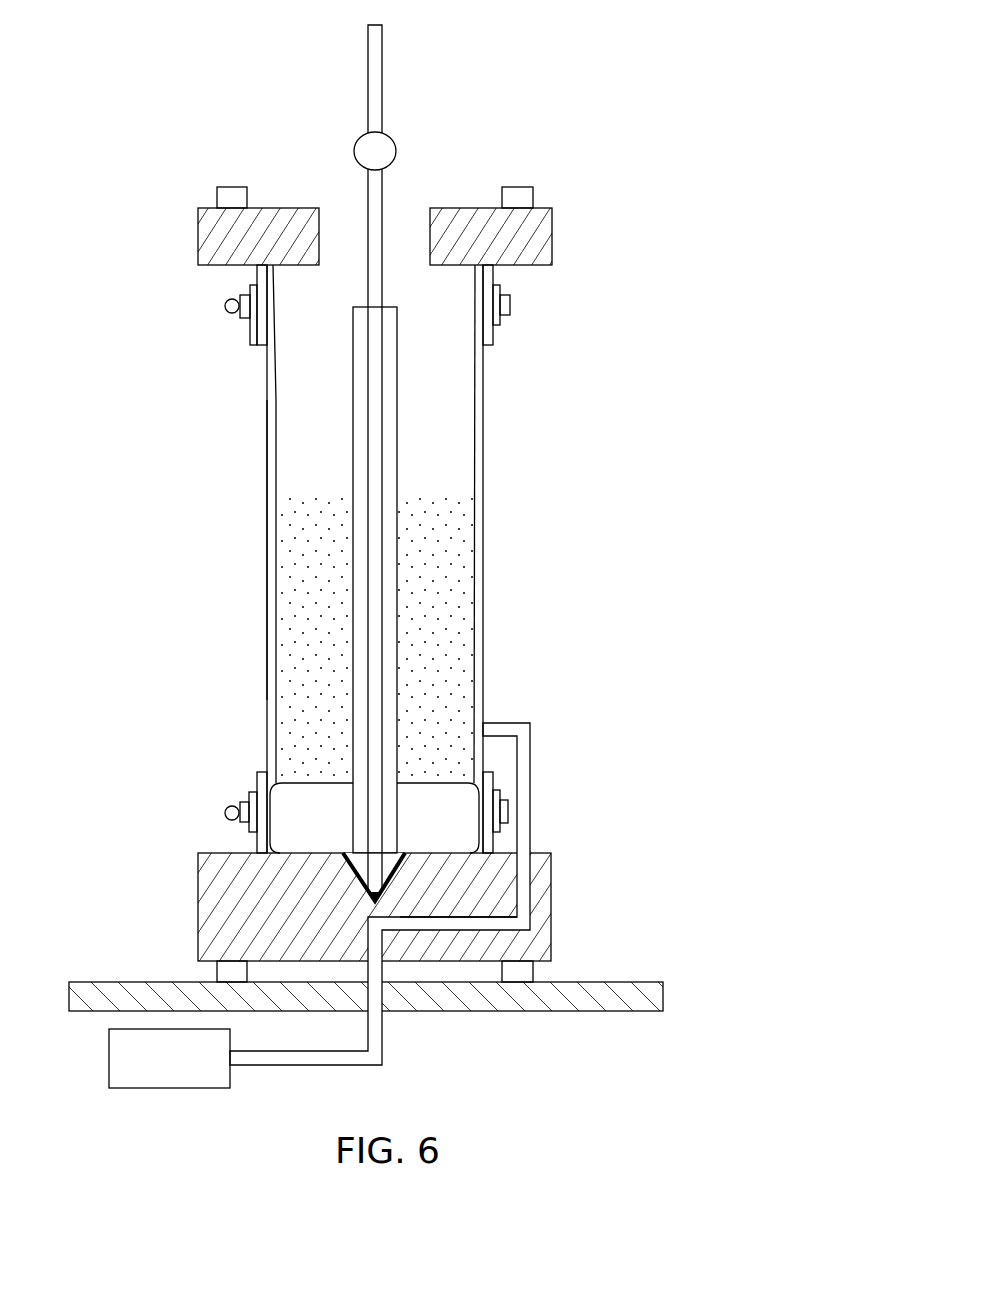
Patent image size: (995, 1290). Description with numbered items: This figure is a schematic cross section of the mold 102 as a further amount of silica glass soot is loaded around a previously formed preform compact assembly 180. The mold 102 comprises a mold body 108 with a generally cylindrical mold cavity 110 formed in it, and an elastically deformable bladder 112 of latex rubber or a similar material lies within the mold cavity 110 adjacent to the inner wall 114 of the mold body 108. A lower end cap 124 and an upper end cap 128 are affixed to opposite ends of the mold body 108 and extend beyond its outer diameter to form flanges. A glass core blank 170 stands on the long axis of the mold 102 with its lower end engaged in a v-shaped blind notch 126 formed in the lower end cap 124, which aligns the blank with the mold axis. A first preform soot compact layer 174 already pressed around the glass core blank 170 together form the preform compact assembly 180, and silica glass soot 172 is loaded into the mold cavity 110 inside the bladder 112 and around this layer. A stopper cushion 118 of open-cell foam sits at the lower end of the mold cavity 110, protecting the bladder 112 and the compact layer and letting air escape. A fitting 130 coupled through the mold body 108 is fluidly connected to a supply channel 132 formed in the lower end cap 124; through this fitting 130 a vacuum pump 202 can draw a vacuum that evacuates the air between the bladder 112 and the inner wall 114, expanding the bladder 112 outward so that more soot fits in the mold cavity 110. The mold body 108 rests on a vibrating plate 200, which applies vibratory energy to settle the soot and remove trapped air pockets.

The mold 102 is at (616, 117).
The mold body 108 is at (485, 518).
The mold cavity 110 is at (268, 472).
The elastically deformable bladder 112 is at (273, 387).
The inner wall 114 is at (270, 448).
The stopper cushion 118 is at (285, 793).
The lower end cap 124 is at (552, 902).
The blind notch 126 is at (353, 870).
The upper end cap 128 is at (552, 236).
The fitting 130 is at (532, 753).
The supply channel 132 is at (447, 913).
The glass core blank 170 is at (383, 70).
The first amount of silica glass soot 172 is at (423, 483).
The first preform soot compact layer 174 is at (353, 348).
The preform compact assembly 180 is at (406, 352).
The vibrating plate 200 is at (663, 995).
The vacuum pump 202 is at (109, 1060).